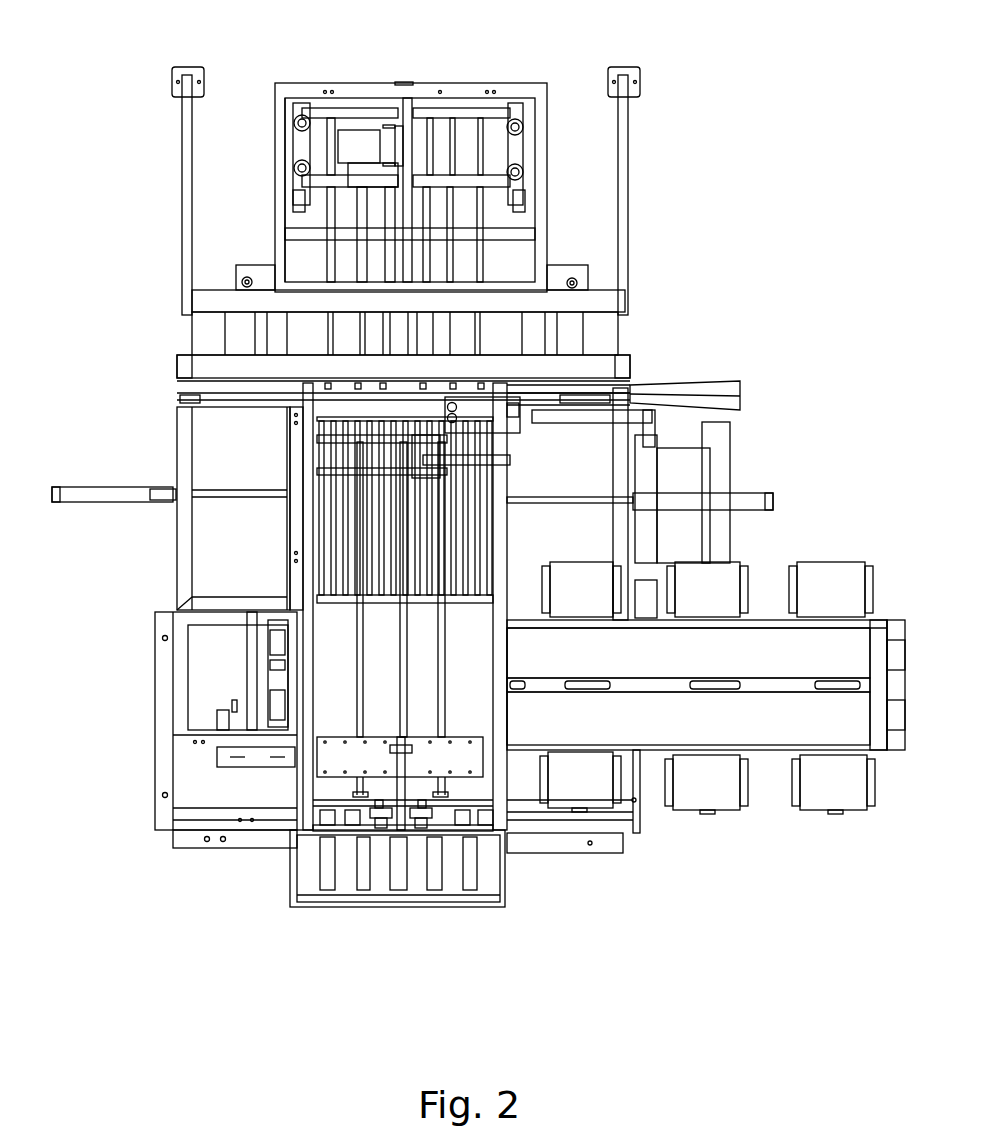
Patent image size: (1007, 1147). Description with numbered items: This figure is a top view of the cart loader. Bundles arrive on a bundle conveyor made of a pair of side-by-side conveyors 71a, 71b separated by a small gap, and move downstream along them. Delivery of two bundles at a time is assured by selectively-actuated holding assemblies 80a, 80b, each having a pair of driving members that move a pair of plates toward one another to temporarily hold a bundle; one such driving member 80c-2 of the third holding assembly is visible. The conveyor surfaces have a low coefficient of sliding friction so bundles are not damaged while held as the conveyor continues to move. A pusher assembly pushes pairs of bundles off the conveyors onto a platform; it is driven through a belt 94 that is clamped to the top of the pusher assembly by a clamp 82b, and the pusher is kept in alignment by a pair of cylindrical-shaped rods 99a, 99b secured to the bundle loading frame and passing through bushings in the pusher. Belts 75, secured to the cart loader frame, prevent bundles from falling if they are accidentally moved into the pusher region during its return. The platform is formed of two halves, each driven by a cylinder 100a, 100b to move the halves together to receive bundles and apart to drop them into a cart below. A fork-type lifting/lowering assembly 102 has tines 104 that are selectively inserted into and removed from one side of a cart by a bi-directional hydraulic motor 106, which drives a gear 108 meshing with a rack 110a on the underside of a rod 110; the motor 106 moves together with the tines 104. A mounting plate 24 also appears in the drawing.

The fork-type lifting/lowering assembly 102 is at (416, 155).
The tines 104 is at (337, 212).
The hydraulic motor 106 is at (340, 147).
The gear 108 is at (413, 128).
The rod 110 is at (380, 130).
The rack 110a is at (432, 125).
The cylinder 100a is at (127, 487).
The cylinder 100b is at (773, 497).
The cylindrical-shaped rod 99a is at (335, 655).
The cylindrical-shaped rod 99b is at (440, 642).
The belt 94 is at (410, 668).
The clamp 82b is at (395, 756).
The mounting plate 24 is at (400, 757).
The driving member 80c-2 is at (575, 762).
The holding assembly 80a is at (861, 823).
The holding assembly 80b is at (733, 823).
The conveyor 71a is at (845, 669).
The conveyor 71b is at (845, 732).
The belts 75 is at (397, 875).